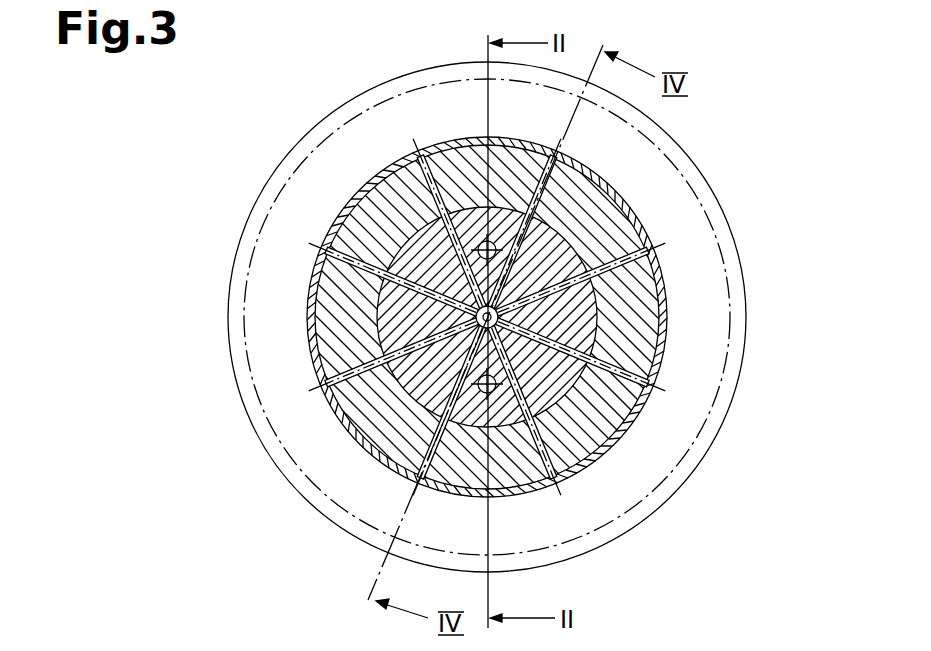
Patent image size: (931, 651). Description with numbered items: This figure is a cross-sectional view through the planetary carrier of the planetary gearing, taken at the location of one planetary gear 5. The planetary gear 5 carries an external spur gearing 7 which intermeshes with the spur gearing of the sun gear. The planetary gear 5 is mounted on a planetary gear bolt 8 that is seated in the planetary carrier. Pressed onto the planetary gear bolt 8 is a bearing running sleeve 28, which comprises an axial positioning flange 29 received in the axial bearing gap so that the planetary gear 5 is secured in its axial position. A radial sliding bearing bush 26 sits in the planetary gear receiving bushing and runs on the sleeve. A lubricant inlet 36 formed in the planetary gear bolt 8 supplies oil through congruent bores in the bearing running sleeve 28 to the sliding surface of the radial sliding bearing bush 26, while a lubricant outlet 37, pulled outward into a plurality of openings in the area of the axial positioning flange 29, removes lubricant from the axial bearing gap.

The planetary gear 5 is at (692, 170).
The external spur gearing 7 is at (712, 433).
The planetary gear bolt 8 is at (613, 185).
The first radial sliding bearing bush 26 is at (662, 360).
The bearing running sleeve 28 is at (642, 278).
The axial positioning flange 29 is at (640, 314).
The lubricant inlet 36 is at (484, 243).
The lubricant outlet 37 is at (390, 250).